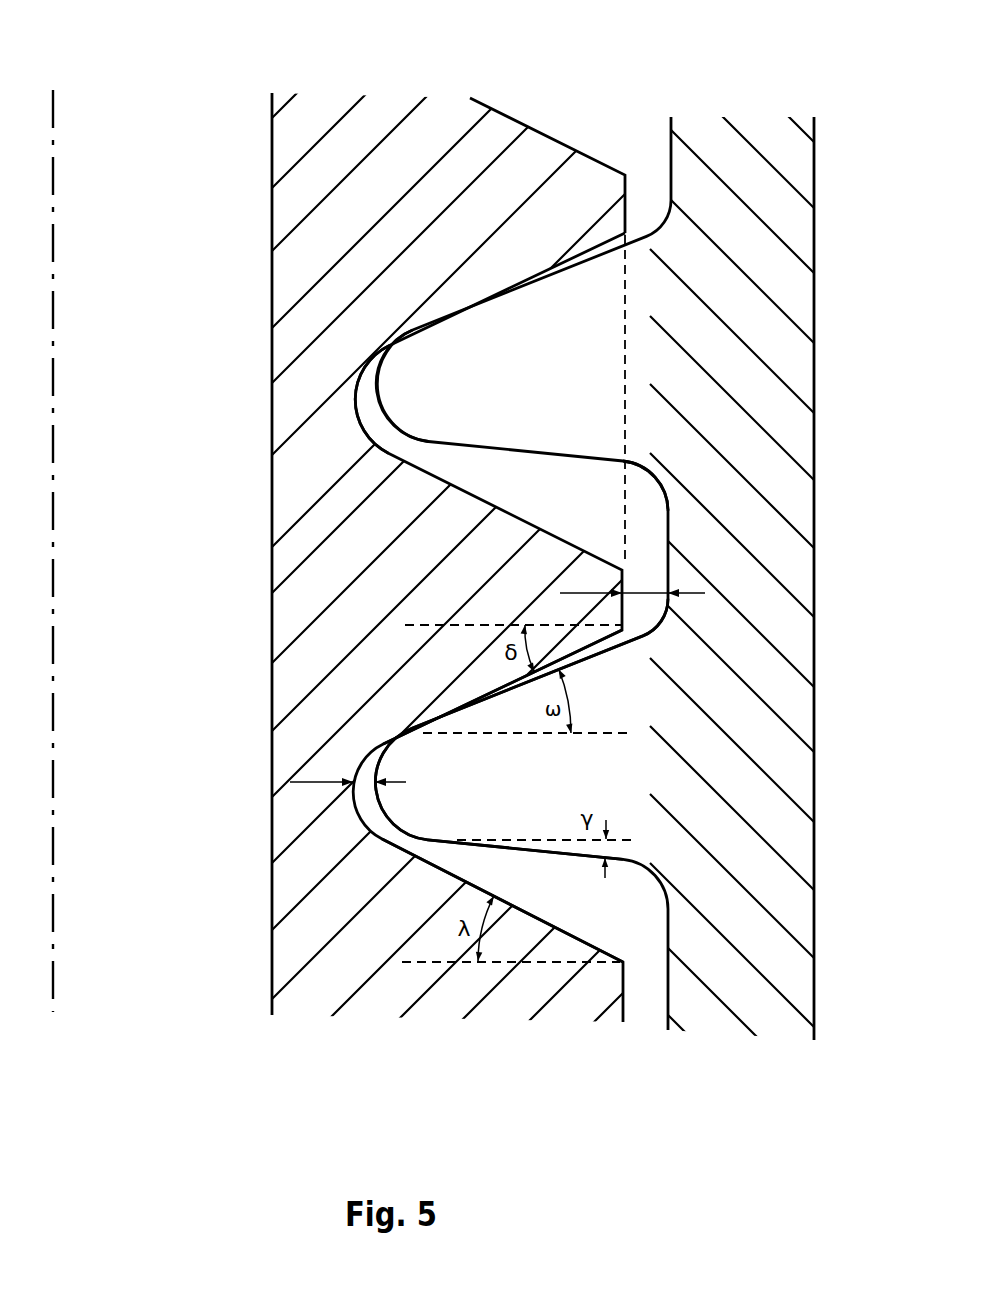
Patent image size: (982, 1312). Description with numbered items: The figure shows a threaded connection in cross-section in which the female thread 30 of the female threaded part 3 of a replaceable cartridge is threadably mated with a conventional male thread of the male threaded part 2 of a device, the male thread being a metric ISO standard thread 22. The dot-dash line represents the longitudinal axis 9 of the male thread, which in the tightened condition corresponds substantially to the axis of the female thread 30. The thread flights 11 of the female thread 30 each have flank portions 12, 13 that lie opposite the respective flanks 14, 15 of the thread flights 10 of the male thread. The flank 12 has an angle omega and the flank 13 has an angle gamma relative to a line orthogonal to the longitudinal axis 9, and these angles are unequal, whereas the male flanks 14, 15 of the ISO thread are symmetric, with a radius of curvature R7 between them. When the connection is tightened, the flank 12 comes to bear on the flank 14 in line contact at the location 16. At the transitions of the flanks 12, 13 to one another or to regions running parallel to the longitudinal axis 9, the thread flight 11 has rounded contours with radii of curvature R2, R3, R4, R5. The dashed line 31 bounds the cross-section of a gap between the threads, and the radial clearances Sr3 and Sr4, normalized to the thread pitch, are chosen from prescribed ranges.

The male threaded part 2 is at (491, 552).
The female threaded part 3 is at (632, 593).
The longitudinal axis 9 is at (58, 157).
The thread flights of male thread 10 is at (487, 580).
The thread flights of female thread 11 is at (565, 391).
The flank 12 is at (500, 697).
The flank 13 is at (493, 841).
The flank 14 is at (500, 690).
The flank 15 is at (433, 866).
The location 16 is at (415, 726).
The metric ISO standard thread 22 is at (296, 256).
The female thread 30 is at (792, 275).
The dashed line 31 is at (625, 314).
The radius of curvature R2 is at (664, 620).
The radius of curvature R3 is at (660, 481).
The radius of curvature R4 is at (390, 426).
The radius of curvature R5 is at (387, 363).
The radius of curvature R7 is at (342, 390).
The radial clearance Sr3 is at (348, 770).
The radial clearance Sr4 is at (632, 579).